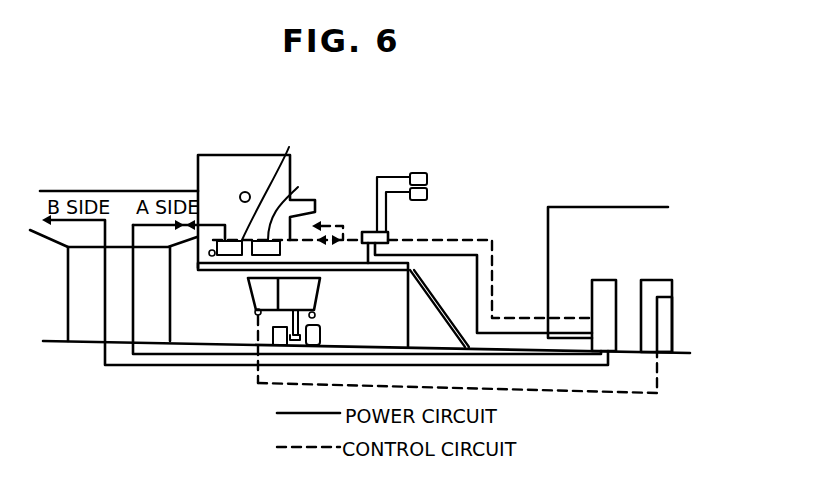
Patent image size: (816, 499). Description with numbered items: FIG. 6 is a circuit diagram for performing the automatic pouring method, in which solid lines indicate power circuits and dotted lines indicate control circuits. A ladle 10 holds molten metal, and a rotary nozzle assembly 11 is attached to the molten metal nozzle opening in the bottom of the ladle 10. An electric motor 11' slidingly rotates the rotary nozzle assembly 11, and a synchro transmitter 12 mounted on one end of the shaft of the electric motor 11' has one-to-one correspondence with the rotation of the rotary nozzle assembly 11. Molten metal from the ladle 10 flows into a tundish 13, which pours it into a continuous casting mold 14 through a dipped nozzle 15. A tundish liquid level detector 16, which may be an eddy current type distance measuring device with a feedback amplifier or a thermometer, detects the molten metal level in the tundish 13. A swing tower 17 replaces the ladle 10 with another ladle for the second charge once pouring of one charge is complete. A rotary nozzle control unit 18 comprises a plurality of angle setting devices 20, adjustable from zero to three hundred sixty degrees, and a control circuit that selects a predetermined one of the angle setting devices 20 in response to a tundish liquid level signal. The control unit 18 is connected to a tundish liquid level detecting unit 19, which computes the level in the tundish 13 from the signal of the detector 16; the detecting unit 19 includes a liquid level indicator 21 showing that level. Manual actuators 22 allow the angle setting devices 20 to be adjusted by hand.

The ladle 10 is at (237, 165).
The electric motor 11' is at (279, 184).
The rotary nozzle assembly 11 is at (296, 202).
The synchro transmitter 12 is at (208, 258).
The tundish 13 is at (306, 302).
The continuous casting mold 14 is at (322, 334).
The dipped nozzle 15 is at (318, 322).
The tundish liquid level detector 16 is at (255, 313).
The swing tower 17 is at (88, 191).
The rotary nozzle control unit 18 is at (597, 280).
The tundish liquid level detecting unit 19 is at (654, 280).
The angle setting devices 20 is at (365, 232).
The liquid level indicator 21 is at (673, 323).
The manual actuators 22 is at (427, 178).